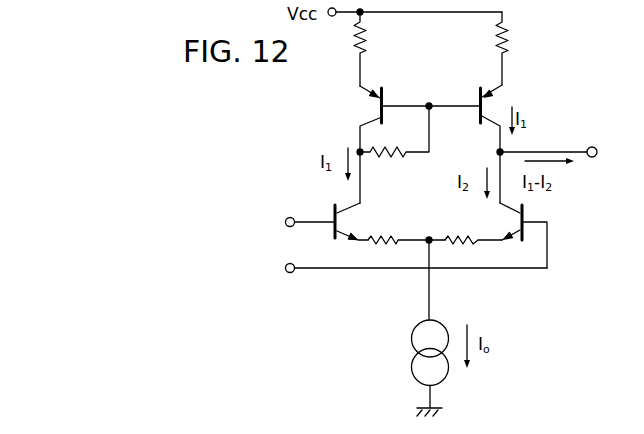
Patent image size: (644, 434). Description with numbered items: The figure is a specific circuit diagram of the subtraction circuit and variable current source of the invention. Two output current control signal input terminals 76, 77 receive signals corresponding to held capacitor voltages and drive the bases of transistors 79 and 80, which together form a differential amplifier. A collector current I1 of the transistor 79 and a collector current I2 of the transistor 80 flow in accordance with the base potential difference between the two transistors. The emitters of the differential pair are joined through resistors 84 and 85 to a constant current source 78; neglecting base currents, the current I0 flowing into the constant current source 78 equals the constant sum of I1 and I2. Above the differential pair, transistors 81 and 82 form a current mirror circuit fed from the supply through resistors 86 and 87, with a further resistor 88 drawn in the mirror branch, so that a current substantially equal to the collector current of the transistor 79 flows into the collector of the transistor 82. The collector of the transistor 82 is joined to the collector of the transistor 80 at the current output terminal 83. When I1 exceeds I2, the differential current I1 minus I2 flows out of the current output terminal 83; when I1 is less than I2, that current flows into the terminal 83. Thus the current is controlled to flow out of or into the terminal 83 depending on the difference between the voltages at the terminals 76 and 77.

The output current control signal input terminal 76 is at (292, 217).
The output current control signal input terminal 77 is at (286, 264).
The constant current source 78 is at (411, 353).
The transistor 79 is at (358, 241).
The transistor 80 is at (508, 218).
The transistor 81 is at (362, 102).
The transistor 82 is at (497, 105).
The current output terminal 83 is at (597, 148).
The resistor 84 is at (380, 236).
The resistor 85 is at (462, 250).
The resistor 86 is at (368, 40).
The resistor 87 is at (507, 42).
The resistor 88 is at (388, 160).